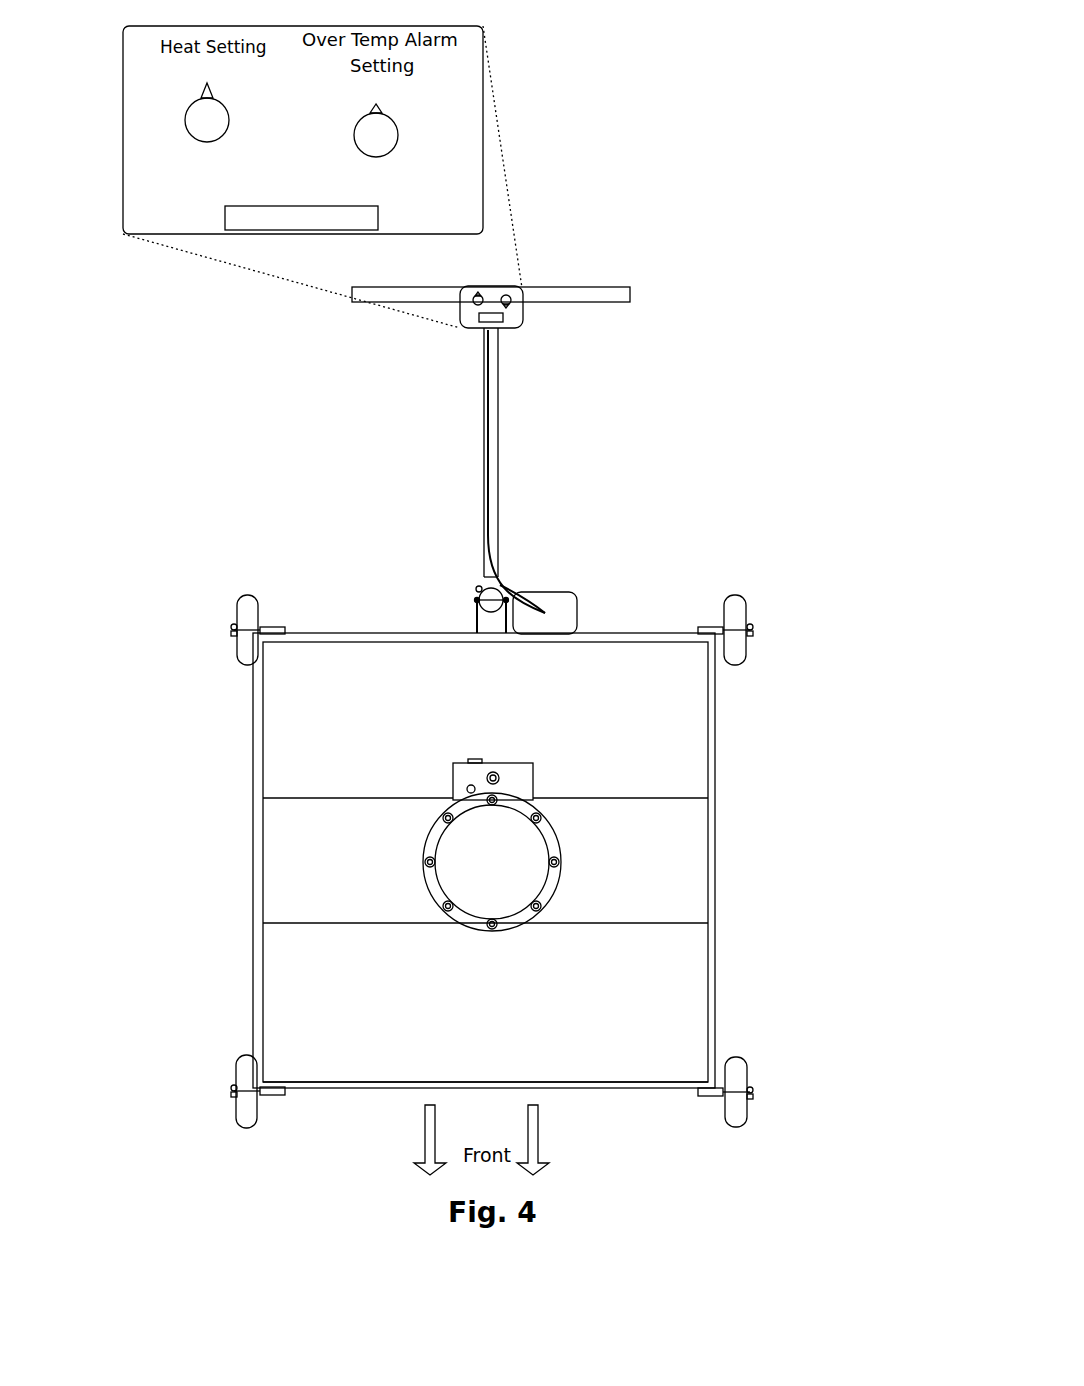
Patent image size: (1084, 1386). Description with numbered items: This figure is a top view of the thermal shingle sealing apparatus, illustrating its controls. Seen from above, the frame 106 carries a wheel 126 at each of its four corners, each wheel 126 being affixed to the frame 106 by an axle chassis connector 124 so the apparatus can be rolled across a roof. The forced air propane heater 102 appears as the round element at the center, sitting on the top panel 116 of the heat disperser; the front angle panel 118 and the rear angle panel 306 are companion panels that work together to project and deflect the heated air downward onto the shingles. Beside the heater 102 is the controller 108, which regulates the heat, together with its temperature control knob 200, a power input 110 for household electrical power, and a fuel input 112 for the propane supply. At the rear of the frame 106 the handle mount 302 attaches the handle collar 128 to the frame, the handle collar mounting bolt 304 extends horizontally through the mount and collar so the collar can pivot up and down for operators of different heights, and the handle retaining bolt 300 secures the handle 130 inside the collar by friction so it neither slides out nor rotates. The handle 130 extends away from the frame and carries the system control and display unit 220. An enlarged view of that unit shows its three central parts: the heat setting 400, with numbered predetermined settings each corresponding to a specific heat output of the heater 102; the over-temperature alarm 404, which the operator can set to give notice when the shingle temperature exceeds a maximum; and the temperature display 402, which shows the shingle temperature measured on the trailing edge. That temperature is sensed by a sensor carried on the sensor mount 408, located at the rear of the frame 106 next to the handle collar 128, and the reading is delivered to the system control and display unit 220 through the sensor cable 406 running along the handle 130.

The forced air propane heater 102 is at (485, 862).
The frame 106 is at (258, 848).
The controller 108 is at (533, 777).
The power input 110 is at (467, 789).
The fuel input 112 is at (496, 774).
The top panel 116 is at (627, 858).
The front angle panel 118 is at (542, 1013).
The axle chassis connector 124 is at (272, 1095).
The wheel 126 is at (235, 1088).
The handle collar 128 is at (488, 587).
The handle 130 is at (502, 432).
The temperature control knob 200 is at (473, 760).
The system control and display unit 220 is at (492, 306).
The handle retaining bolt 300 is at (478, 588).
The handle mount 302 is at (476, 613).
The handle collar mounting bolt 304 is at (476, 600).
The rear angle panel 306 is at (633, 727).
The heat setting 400 is at (207, 120).
The temperature display 402 is at (225, 218).
The over-temperature alarm 404 is at (376, 135).
The sensor cable 406 is at (503, 591).
The sensor mount 408 is at (557, 613).